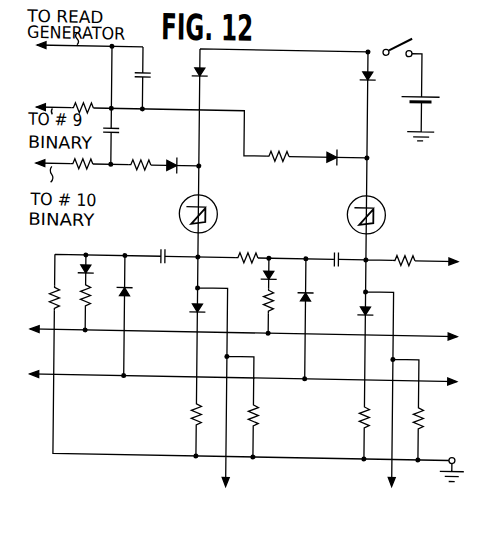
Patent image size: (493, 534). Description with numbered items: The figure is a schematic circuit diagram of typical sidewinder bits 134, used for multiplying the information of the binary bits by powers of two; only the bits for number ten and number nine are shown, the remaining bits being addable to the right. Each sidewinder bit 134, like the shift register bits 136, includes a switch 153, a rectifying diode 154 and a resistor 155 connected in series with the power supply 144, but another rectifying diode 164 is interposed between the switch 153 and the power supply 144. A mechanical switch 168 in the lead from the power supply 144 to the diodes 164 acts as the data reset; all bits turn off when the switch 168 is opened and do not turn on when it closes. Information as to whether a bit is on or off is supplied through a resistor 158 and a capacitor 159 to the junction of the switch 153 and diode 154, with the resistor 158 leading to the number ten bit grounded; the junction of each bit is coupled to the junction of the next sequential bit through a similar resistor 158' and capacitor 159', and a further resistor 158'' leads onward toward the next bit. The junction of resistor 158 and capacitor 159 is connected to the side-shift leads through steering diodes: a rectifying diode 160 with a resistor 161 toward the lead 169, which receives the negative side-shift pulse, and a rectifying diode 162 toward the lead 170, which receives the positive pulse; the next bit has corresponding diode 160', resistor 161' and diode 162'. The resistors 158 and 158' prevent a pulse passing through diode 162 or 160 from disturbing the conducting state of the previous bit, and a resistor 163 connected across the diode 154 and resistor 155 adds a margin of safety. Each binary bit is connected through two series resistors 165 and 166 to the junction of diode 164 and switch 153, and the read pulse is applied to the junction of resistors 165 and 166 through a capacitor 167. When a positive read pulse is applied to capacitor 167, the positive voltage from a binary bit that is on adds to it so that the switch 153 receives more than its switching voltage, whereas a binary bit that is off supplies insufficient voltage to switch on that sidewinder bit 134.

The sidewinder bit 134 is at (239, 207).
The shift register bit 136 is at (228, 467).
The power supply 144 is at (426, 87).
The switch 153 is at (219, 214).
The rectifying diode 154 is at (193, 309).
The resistor 155 is at (192, 413).
The resistor 158 is at (39, 297).
The resistor 158' is at (253, 249).
The resistor 158'' is at (415, 250).
The capacitor 159 is at (147, 248).
The capacitor 159' is at (320, 251).
The rectifying diode 160 is at (99, 271).
The rectifying diode 160' is at (245, 279).
The resistor 161 is at (96, 301).
The resistor 161' is at (278, 310).
The rectifying diode 162 is at (142, 285).
The rectifying diode 162' is at (320, 307).
The resistor 163 is at (261, 407).
The rectifying diode 164 is at (205, 72).
The resistor 165 is at (76, 101).
The resistor 166 is at (140, 157).
The capacitor 167 is at (146, 71).
The mechanical switch 168 is at (395, 41).
The lead 169 is at (118, 331).
The lead 170 is at (117, 374).